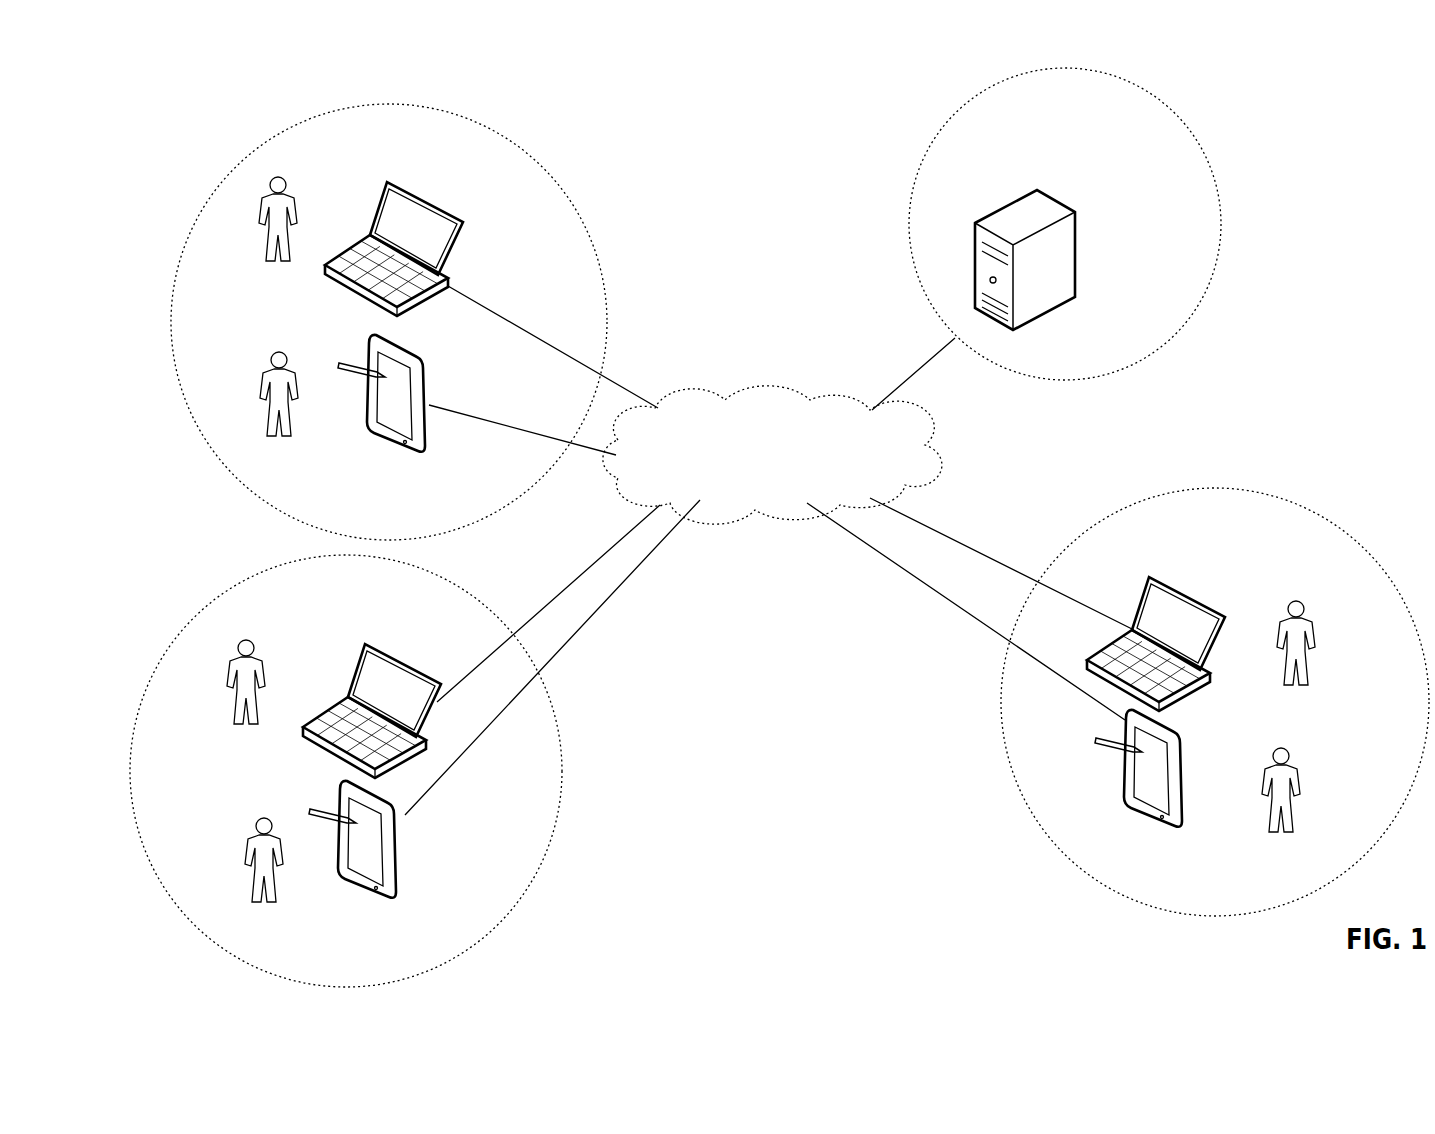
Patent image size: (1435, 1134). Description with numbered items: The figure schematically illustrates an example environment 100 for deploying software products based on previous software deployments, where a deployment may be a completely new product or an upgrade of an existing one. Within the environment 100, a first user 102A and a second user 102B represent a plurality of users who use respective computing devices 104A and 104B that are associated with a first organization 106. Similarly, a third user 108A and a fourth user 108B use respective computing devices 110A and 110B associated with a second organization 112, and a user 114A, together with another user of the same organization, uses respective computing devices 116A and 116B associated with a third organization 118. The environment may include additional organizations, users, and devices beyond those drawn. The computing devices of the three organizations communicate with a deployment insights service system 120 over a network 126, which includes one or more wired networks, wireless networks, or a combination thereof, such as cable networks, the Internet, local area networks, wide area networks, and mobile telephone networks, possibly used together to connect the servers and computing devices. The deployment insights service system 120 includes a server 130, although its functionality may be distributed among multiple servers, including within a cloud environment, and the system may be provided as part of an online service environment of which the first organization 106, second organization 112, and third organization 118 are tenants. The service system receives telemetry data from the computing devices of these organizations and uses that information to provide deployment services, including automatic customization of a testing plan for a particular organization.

The environment 100 is at (183, 140).
The first user 102A is at (278, 234).
The second user 102B is at (279, 408).
The computing device 104A is at (430, 200).
The computing device 104B is at (386, 444).
The first organization 106 is at (389, 322).
The third user 108A is at (246, 697).
The fourth user 108B is at (264, 874).
The computing device 110A is at (401, 660).
The computing device 110B is at (364, 885).
The second organization 112 is at (346, 771).
The fourth user 114A is at (1288, 732).
The computing device 116A is at (1187, 592).
The computing device 116B is at (1147, 818).
The third organization 118 is at (1215, 702).
The deployment insights service system 120 is at (1065, 224).
The network 126 is at (730, 405).
The server 130 is at (1104, 240).